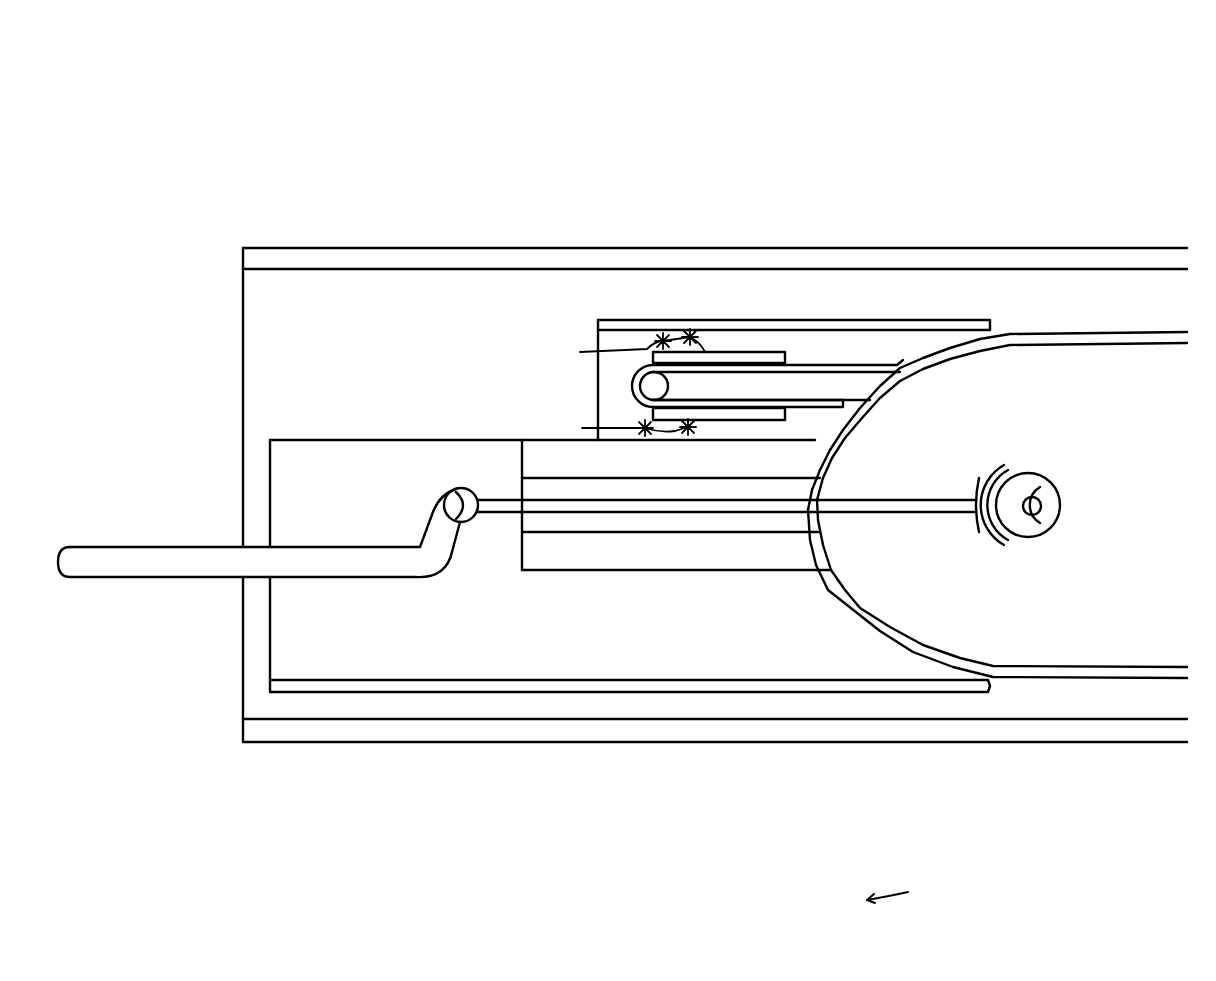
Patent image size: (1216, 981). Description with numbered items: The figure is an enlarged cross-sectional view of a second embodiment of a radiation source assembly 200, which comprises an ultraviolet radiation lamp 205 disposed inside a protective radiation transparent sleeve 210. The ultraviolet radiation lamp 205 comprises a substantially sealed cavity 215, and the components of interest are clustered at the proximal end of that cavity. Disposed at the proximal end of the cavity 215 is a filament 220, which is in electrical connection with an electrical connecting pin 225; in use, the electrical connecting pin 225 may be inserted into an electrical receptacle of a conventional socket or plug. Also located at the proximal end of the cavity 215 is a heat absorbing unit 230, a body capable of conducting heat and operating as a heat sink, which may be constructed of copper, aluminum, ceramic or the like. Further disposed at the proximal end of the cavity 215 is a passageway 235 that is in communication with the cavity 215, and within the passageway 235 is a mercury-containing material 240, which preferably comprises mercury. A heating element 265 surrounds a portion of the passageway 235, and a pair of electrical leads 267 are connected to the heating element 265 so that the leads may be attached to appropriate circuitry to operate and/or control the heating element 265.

The radiation source assembly 200 is at (828, 145).
The ultraviolet radiation lamp 205 is at (997, 396).
The protective radiation transparent sleeve 210 is at (715, 399).
The sealed cavity 215 is at (1182, 537).
The filament 220 is at (1050, 657).
The electrical connecting pin 225 is at (268, 629).
The heat absorbing unit 230 is at (630, 669).
The passageway 235 is at (767, 251).
The mercury-containing material 240 is at (758, 267).
The heating element 265 is at (701, 266).
The electrical leads 267 is at (577, 286).